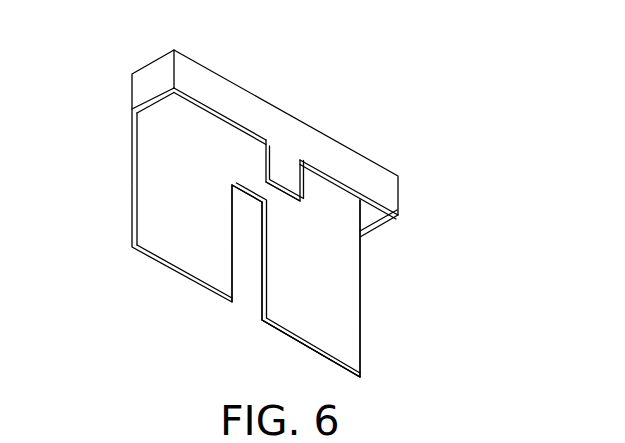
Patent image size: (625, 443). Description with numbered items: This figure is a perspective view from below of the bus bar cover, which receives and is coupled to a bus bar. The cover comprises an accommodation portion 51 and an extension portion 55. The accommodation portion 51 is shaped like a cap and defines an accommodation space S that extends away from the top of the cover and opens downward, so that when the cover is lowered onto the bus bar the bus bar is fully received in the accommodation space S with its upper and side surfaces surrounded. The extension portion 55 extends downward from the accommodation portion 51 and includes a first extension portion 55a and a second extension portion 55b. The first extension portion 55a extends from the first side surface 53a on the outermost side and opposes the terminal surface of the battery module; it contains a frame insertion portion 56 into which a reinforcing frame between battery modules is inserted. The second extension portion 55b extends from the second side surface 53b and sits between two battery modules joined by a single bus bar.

The accommodation portion 51 is at (277, 100).
The first side surface 53a is at (240, 143).
The second side surface 53b is at (233, 100).
The accommodation space S is at (345, 215).
The extension portion 55 is at (382, 277).
The first extension portion 55a is at (343, 303).
The second extension portion 55b is at (287, 178).
The frame insertion portion 56 is at (243, 264).